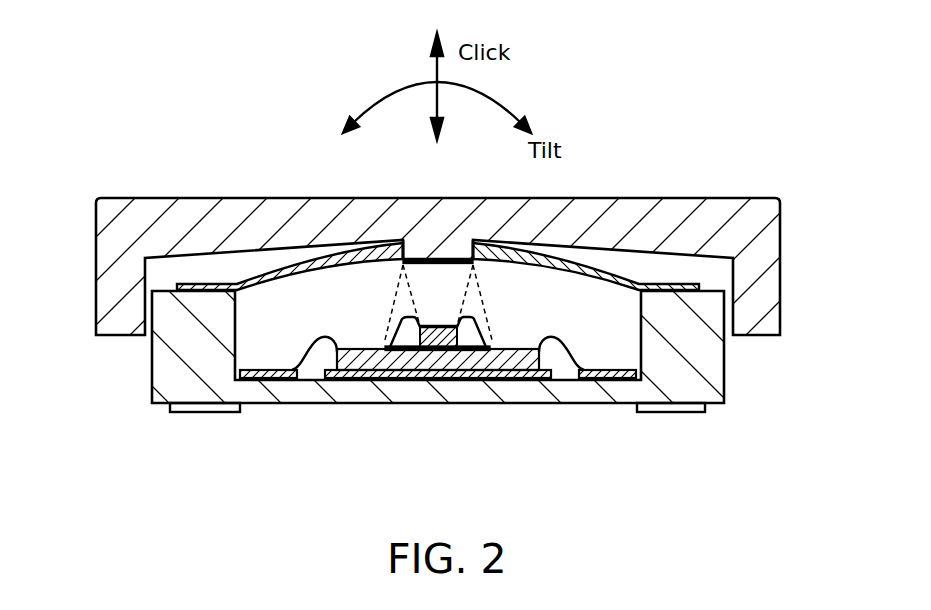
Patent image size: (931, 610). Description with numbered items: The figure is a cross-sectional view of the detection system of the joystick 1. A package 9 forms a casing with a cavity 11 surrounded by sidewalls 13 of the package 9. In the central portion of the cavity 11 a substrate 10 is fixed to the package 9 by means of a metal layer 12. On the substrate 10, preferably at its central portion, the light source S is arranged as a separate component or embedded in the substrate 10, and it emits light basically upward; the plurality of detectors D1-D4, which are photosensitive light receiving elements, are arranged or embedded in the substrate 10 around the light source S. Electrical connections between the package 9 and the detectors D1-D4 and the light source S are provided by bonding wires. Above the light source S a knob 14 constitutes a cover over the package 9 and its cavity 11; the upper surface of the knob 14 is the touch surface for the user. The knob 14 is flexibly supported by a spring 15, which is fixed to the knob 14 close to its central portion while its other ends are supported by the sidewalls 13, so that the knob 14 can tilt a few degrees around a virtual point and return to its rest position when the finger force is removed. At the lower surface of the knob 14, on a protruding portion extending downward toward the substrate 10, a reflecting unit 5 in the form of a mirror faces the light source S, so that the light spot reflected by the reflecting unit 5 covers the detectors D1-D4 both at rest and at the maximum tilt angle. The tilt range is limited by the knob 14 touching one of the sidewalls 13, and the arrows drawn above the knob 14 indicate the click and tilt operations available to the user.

The joystick 1 is at (169, 131).
The reflecting unit 5 is at (403, 240).
The package 9 is at (290, 393).
The substrate 10 is at (527, 366).
The cavity 11 is at (576, 290).
The metal layer 12 is at (488, 382).
The sidewalls 13 is at (163, 373).
The knob 14 is at (446, 258).
The spring 15 is at (268, 272).
The light source S is at (446, 326).
The detectors D1-D4 is at (444, 381).